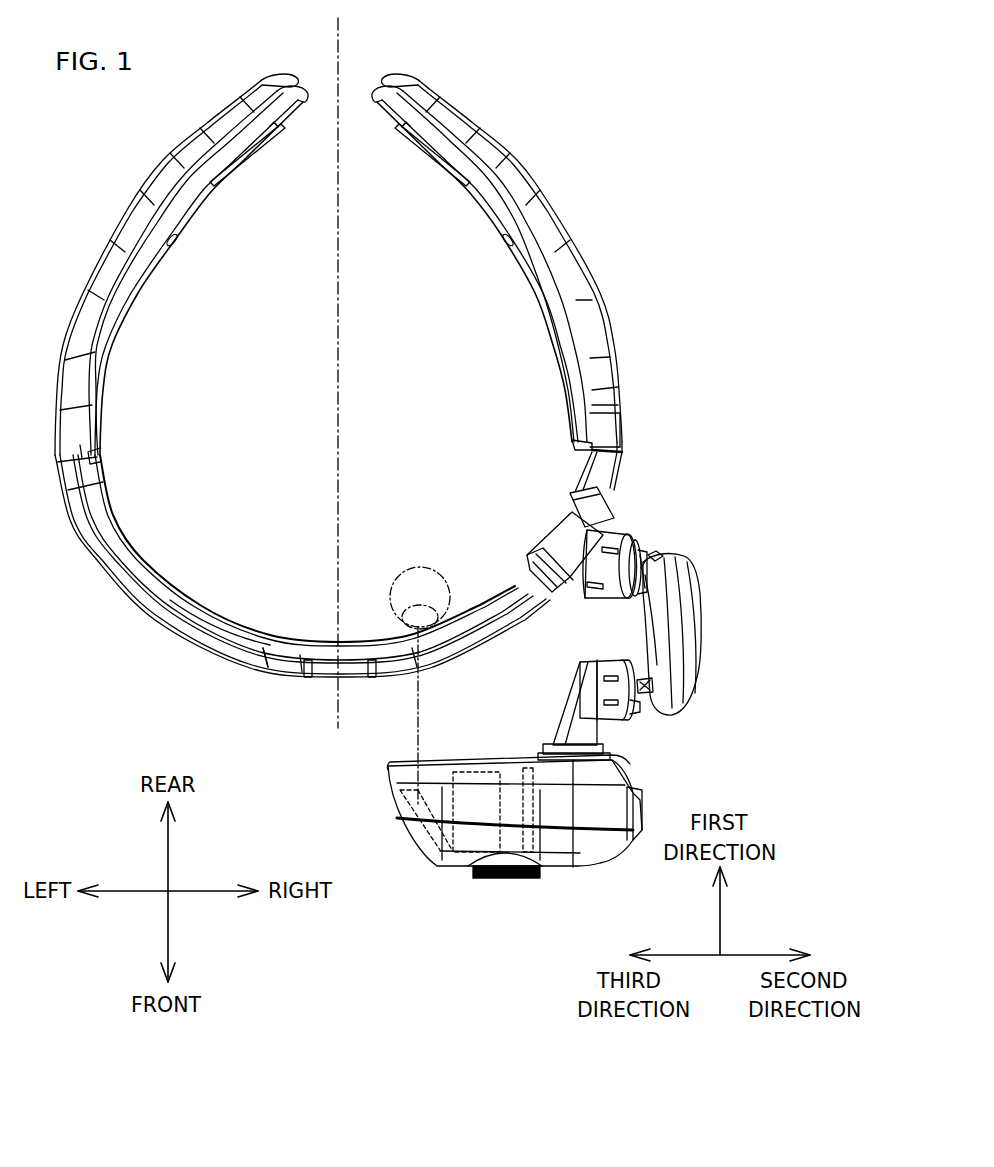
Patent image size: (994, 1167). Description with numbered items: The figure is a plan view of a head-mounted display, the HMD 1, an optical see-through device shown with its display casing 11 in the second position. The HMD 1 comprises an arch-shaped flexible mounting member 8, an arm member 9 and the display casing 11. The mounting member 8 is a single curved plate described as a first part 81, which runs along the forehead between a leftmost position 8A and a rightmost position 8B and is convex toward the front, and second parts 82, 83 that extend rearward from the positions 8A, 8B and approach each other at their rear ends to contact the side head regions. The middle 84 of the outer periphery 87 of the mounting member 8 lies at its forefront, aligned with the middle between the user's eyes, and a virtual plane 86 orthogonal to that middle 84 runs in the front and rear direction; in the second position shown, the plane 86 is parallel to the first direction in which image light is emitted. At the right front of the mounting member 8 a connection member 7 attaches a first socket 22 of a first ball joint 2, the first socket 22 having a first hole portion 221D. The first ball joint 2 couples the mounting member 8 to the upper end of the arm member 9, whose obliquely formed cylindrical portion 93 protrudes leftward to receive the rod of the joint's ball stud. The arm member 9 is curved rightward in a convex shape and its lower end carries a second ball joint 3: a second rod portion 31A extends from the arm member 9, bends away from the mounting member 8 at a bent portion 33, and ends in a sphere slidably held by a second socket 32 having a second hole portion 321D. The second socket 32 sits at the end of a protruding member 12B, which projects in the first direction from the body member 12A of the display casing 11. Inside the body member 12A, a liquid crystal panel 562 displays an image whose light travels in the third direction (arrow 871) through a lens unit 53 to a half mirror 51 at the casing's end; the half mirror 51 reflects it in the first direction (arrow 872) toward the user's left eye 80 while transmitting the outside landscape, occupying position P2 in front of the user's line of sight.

The head-mounted display (HMD) 1 is at (552, 108).
The mounting member 8 is at (160, 622).
The first part 81 is at (217, 635).
The outer periphery 87 is at (272, 668).
The middle 84 is at (340, 676).
The second part 82 is at (200, 196).
The second part 83 is at (480, 196).
The position 8A is at (38, 463).
The position 8B is at (670, 457).
The virtual plane 86 is at (340, 337).
The eye 80 is at (420, 567).
The arrow 872 is at (418, 722).
The connection member 7 is at (572, 533).
The first ball joint 2 is at (655, 552).
The first socket 22 is at (636, 552).
The first hole portion 221D is at (657, 556).
The arm member 9 is at (697, 577).
The cylindrical portion 93 is at (662, 574).
The second rod portion 31A is at (660, 653).
The bent portion 33 is at (652, 681).
The second ball joint 3 is at (645, 710).
The second socket 32 is at (612, 658).
The second hole portion 321D is at (640, 705).
The arrow 871 is at (526, 792).
The protruding member 12B is at (605, 748).
The display casing 11 is at (453, 866).
The position P2 is at (430, 810).
The body member 12A is at (560, 840).
The lens unit 53 is at (480, 792).
The half mirror 51 is at (423, 832).
The liquid crystal panel 562 is at (508, 833).